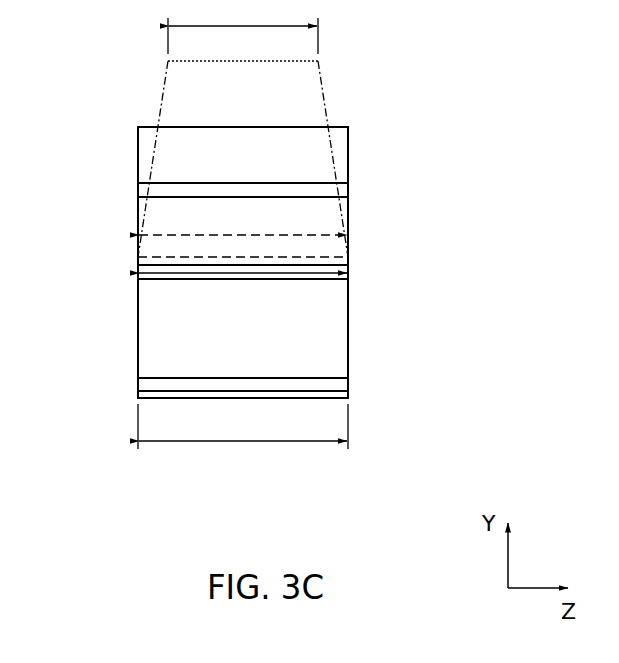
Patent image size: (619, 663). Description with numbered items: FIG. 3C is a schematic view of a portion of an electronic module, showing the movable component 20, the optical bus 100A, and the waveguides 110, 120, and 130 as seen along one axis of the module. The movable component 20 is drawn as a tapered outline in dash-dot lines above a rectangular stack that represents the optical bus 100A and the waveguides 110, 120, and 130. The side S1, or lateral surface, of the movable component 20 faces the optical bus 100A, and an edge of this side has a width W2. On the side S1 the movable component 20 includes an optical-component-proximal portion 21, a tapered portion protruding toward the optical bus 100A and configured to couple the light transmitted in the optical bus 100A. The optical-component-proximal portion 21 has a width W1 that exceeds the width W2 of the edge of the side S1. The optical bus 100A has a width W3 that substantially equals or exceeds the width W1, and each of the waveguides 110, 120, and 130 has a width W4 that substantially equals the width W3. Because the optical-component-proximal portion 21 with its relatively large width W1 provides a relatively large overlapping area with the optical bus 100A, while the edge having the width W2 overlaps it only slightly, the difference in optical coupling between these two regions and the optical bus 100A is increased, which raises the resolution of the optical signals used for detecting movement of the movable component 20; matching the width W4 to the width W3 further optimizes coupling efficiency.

The movable component 20 is at (175, 82).
The optical-component-proximal portion 21 is at (140, 257).
The side S1 is at (306, 88).
The waveguide 110 is at (342, 188).
The waveguide 120 is at (345, 270).
The waveguide 130 is at (340, 383).
The optical bus 100A is at (330, 397).
The width of the optical-component-proximal portion W1 is at (290, 233).
The width of the edge of the side W2 is at (243, 31).
The width of the optical bus W3 is at (243, 426).
The width of the waveguide W4 is at (285, 272).